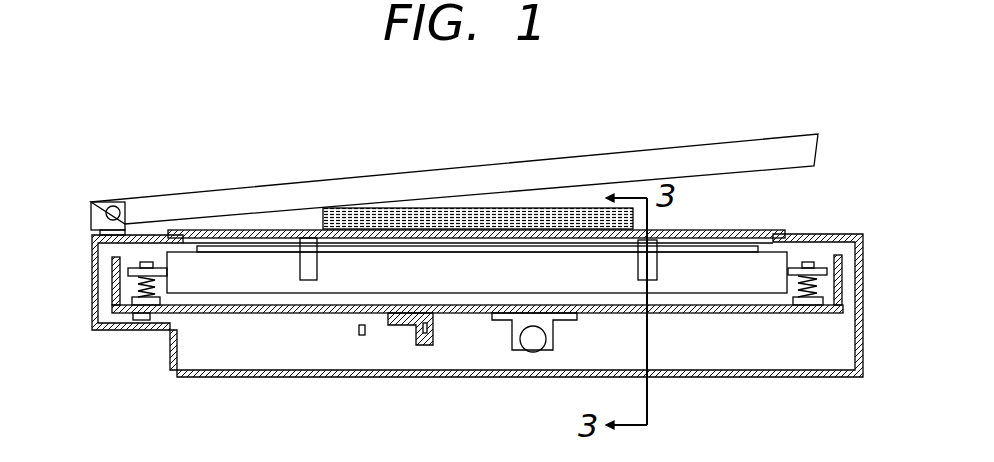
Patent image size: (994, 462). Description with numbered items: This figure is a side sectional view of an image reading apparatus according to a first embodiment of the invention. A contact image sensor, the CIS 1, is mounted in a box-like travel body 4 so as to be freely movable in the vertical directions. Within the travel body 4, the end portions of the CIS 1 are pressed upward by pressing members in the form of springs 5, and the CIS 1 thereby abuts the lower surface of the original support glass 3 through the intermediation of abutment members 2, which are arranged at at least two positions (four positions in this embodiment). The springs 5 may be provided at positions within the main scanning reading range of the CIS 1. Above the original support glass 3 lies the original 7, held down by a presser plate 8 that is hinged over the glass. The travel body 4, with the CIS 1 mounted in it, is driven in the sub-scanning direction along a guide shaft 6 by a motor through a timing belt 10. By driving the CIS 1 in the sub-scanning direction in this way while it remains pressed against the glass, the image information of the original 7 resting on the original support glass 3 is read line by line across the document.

The CIS 1 is at (777, 258).
The abutment members 2 is at (305, 237).
The original support glass 3 is at (760, 232).
The travel body 4 is at (729, 314).
The springs 5 is at (140, 290).
The guide shaft 6 is at (533, 348).
The original 7 is at (532, 212).
The presser plate 8 is at (408, 177).
The timing belt 10 is at (417, 337).